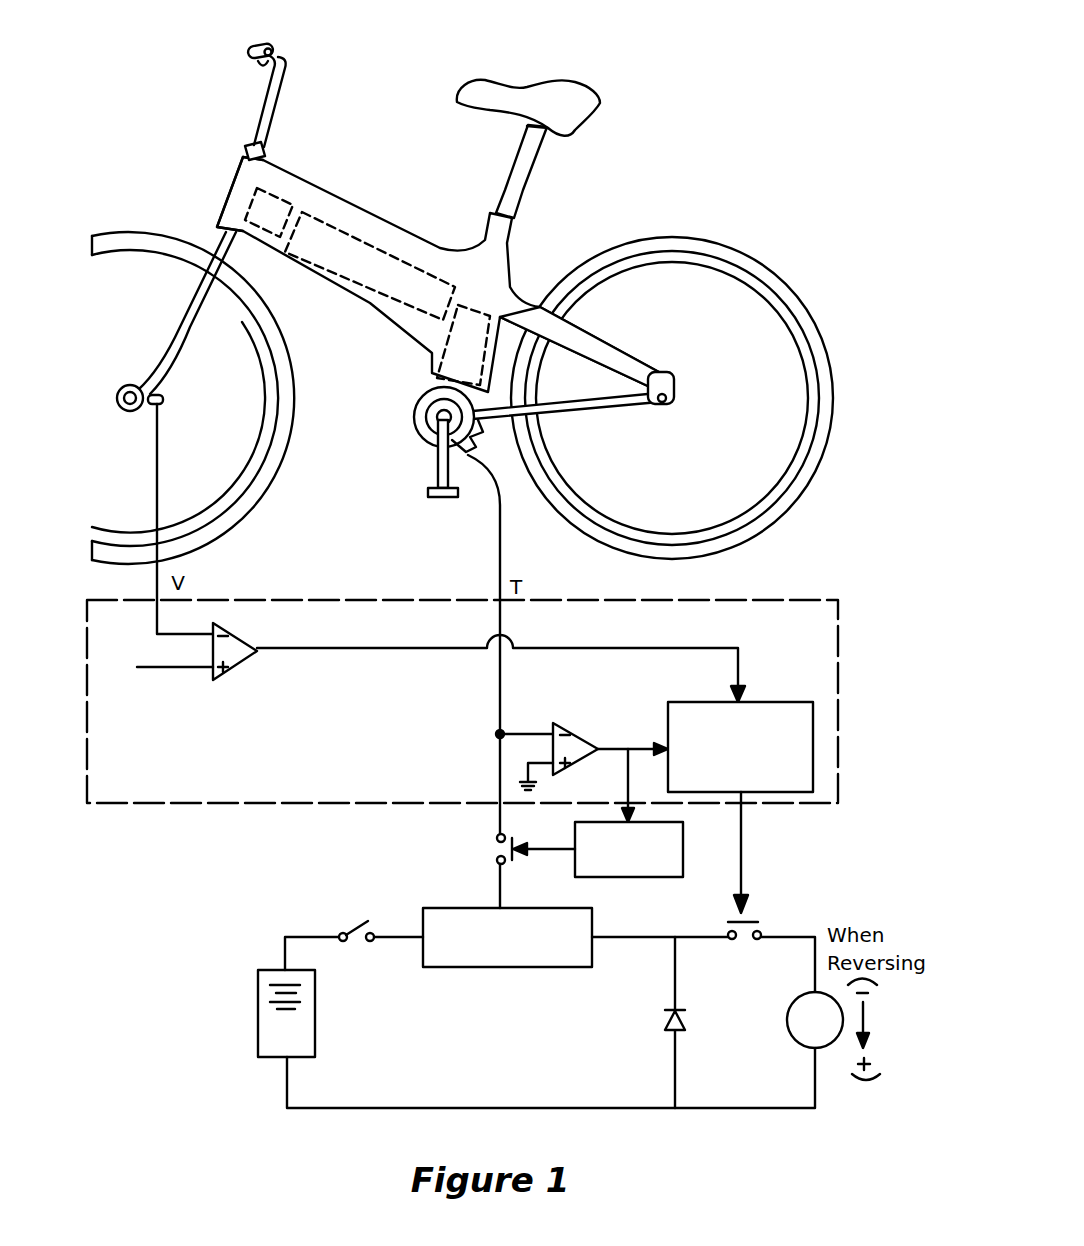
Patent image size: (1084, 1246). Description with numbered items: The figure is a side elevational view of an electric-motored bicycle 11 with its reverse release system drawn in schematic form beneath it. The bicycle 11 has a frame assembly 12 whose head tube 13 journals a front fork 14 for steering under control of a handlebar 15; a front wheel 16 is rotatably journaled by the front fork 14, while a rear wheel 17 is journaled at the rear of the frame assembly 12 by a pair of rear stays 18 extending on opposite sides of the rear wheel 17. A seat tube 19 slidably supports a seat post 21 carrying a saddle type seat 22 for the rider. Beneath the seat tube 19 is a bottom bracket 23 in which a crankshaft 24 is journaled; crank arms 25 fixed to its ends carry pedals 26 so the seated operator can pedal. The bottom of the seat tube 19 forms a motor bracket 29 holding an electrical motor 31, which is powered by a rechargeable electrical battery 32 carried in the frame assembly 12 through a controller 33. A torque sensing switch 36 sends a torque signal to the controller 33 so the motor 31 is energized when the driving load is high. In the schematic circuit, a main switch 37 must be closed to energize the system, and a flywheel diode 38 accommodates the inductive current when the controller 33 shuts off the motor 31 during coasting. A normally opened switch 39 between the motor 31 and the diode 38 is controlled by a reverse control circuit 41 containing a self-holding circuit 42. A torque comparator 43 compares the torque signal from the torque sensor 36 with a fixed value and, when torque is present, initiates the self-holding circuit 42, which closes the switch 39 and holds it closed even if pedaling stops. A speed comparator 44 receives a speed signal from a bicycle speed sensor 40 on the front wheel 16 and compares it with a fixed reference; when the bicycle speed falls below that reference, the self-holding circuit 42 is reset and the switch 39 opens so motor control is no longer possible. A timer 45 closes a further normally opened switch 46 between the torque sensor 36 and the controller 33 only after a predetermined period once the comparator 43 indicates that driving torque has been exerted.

The bicycle 11 is at (467, 562).
The frame assembly 12 is at (352, 200).
The head tube 13 is at (232, 187).
The front fork 14 is at (196, 291).
The handlebar 15 is at (258, 108).
The front wheel 16 is at (172, 236).
The rear wheel 17 is at (703, 237).
The rear stays 18 is at (608, 412).
The seat tube 19 is at (513, 230).
The seat post 21 is at (600, 136).
The saddle type seat 22 is at (572, 78).
The bottom bracket 23 is at (417, 436).
The crankshaft 24 is at (420, 422).
The crank arms 25 is at (432, 465).
The pedals 26 is at (455, 500).
The motor bracket 29 is at (432, 366).
The electrical motor 31 is at (415, 395).
The rechargeable electrical battery 32 is at (402, 257).
The controller 33 is at (274, 195).
The torque sensing switch 36 is at (478, 452).
The main switch 37 is at (357, 925).
The flywheel diode 38 is at (665, 1012).
The normally opened switch 39 is at (746, 943).
The bicycle speed sensor 40 is at (163, 400).
The reverse control circuit 41 is at (193, 803).
The self-holding circuit 42 is at (797, 700).
The torque comparator 43 is at (568, 723).
The speed comparator 44 is at (247, 657).
The timer 45 is at (615, 878).
The normally opened switch 46 is at (492, 849).